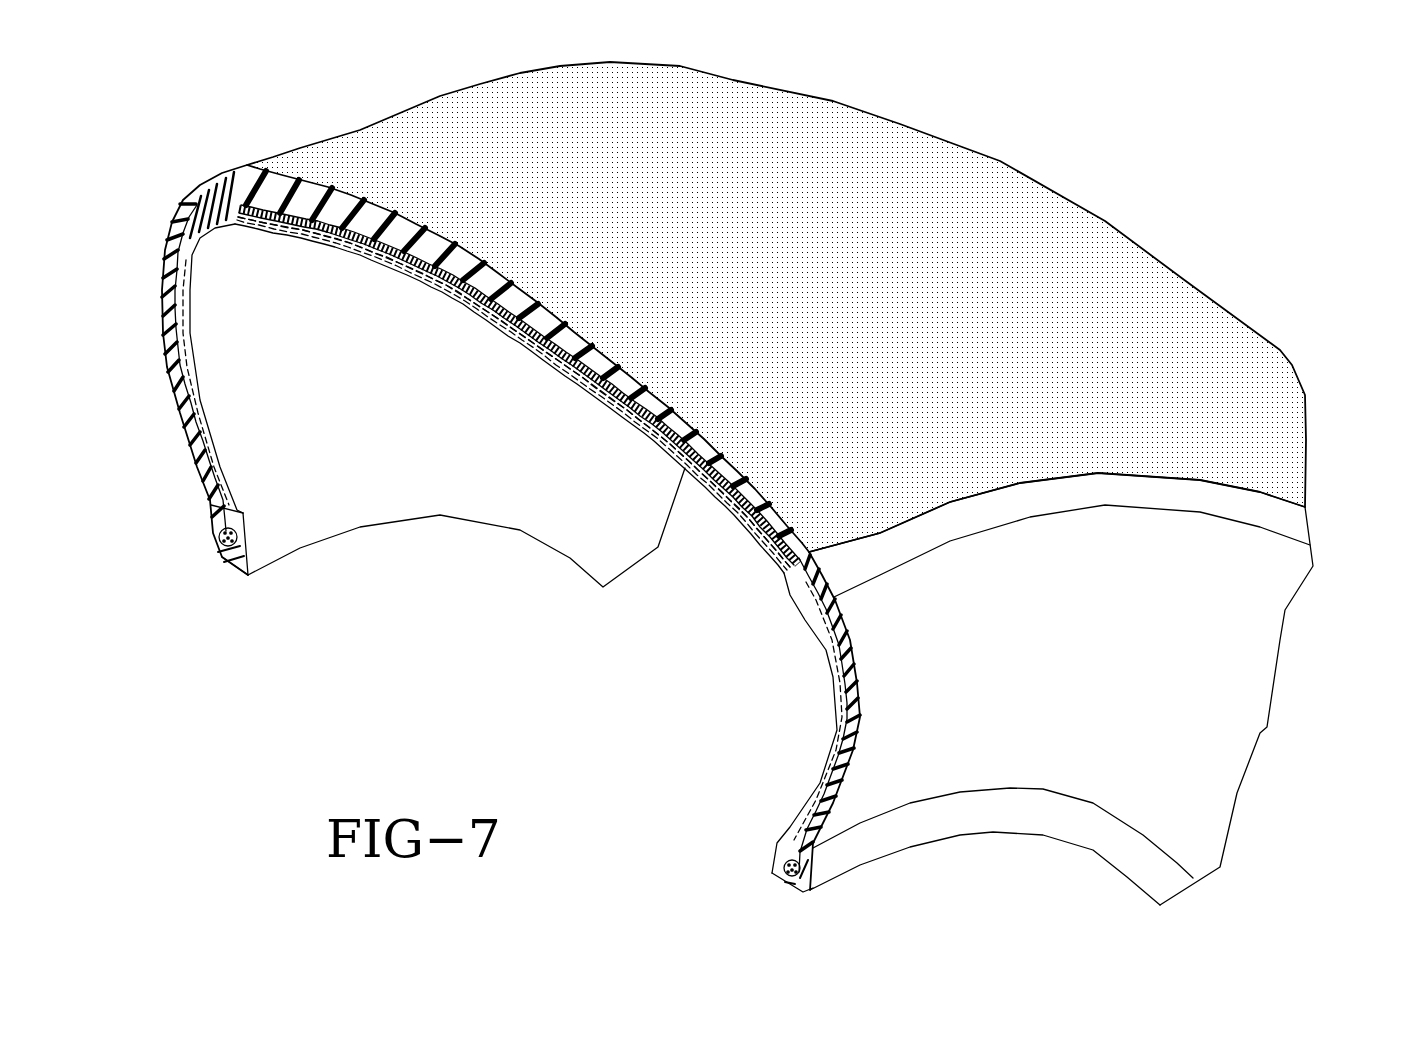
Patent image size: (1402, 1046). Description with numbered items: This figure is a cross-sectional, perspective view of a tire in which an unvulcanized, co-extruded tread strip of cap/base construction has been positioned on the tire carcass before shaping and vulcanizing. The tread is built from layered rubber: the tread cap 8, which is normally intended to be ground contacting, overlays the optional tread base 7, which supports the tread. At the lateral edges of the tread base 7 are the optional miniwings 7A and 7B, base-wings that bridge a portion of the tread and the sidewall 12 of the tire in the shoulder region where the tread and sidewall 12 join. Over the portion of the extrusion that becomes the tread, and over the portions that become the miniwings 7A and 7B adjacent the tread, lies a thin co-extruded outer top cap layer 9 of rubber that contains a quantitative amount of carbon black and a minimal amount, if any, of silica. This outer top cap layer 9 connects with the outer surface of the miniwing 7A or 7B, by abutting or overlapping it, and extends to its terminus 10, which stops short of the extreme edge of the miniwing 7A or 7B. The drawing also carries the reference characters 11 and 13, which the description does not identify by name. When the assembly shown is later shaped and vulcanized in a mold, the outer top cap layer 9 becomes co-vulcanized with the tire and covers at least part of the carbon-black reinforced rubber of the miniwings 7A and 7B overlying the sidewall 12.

The tread base 7 is at (378, 248).
The miniwing 7A is at (812, 566).
The miniwing 7B is at (812, 566).
The tread cap 8 is at (268, 203).
The outer top cap layer 9 is at (340, 118).
The terminus 10 is at (1312, 512).
The tire 11 is at (1143, 195).
The sidewall 12 is at (166, 262).
The bead 13 is at (222, 540).